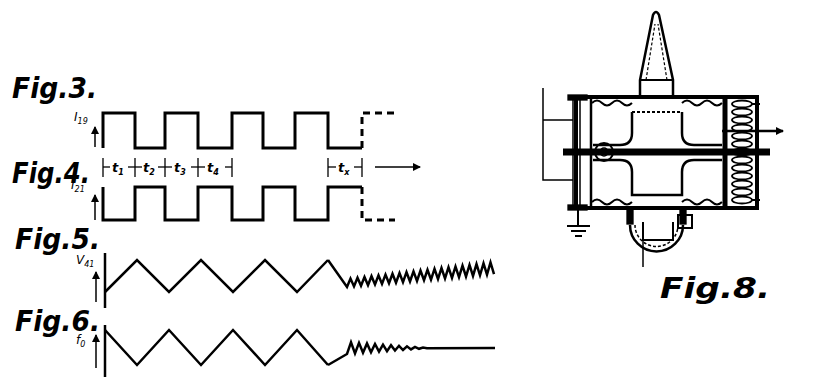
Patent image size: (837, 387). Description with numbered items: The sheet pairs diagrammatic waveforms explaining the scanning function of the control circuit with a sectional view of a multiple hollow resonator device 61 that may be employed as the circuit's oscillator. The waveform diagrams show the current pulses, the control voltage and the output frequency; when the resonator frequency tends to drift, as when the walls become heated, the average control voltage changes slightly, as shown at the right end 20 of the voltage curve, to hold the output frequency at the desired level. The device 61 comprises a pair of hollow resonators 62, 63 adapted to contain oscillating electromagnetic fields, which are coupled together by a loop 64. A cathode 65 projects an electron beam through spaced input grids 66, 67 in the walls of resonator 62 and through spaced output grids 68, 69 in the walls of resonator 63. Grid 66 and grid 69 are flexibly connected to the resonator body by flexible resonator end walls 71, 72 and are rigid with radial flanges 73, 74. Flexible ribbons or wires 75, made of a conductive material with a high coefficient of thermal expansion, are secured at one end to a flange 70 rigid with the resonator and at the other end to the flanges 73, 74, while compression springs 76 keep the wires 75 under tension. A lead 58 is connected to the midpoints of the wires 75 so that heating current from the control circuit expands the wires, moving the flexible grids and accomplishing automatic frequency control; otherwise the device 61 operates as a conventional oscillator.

In FIG. 5, the right end of control voltage curve 20 is at (433, 265).
In FIG. 8, the lead 58 is at (551, 85).
In FIG. 8, the multiple hollow resonator device 61 is at (700, 80).
In FIG. 8, the hollow resonator 62 is at (577, 193).
In FIG. 8, the hollow resonator 63 is at (607, 100).
In FIG. 8, the loop 64 is at (605, 143).
In FIG. 8, the cathode 65 is at (688, 226).
In FIG. 8, the input grid 66 is at (628, 210).
In FIG. 8, the input grid 67 is at (657, 158).
In FIG. 8, the output grid 68 is at (680, 121).
In FIG. 8, the output grid 69 is at (662, 95).
In FIG. 8, the flange 70 is at (757, 144).
In FIG. 8, the flexible resonator end wall 71 is at (722, 197).
In FIG. 8, the flexible resonator end wall 72 is at (613, 98).
In FIG. 8, the radial flange 73 is at (733, 210).
In FIG. 8, the radial flange 74 is at (736, 94).
In FIG. 8, the flexible ribbons or wires 75 is at (563, 150).
In FIG. 8, the compression springs 76 is at (754, 112).